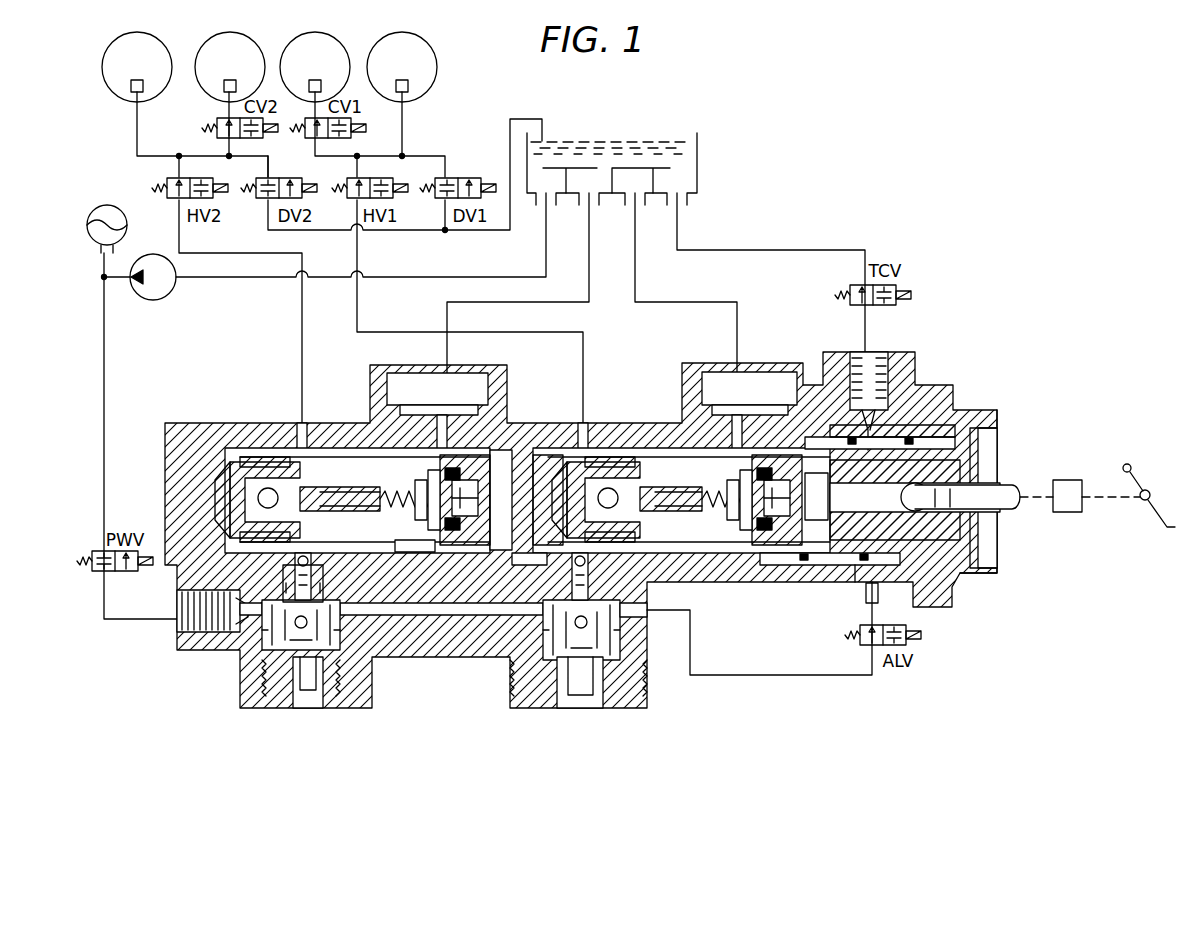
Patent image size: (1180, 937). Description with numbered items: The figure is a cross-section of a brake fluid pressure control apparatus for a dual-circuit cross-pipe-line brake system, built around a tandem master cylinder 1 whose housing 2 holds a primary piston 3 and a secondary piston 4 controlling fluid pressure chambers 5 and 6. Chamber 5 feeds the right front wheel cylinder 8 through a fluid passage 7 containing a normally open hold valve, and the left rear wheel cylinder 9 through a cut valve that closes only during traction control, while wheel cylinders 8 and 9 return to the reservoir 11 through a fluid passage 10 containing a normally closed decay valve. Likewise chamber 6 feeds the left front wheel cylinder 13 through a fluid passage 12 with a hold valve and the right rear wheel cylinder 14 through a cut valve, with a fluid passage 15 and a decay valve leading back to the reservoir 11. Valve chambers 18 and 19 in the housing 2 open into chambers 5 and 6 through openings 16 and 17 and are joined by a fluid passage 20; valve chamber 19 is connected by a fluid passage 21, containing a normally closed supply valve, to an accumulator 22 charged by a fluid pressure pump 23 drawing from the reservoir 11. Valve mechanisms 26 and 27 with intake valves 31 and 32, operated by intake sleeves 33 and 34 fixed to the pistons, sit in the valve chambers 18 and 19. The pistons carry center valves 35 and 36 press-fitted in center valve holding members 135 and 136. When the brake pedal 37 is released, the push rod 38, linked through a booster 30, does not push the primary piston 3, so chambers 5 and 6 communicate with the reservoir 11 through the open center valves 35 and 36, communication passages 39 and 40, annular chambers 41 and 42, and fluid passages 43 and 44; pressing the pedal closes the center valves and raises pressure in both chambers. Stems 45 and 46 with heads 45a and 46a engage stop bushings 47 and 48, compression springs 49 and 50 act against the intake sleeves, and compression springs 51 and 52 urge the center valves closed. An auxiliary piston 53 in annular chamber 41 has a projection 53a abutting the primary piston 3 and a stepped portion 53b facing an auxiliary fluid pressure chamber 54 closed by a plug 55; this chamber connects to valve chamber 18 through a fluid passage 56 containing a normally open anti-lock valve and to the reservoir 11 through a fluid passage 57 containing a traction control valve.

The master cylinder 1 is at (985, 580).
The master cylinder housing 2 is at (915, 352).
The primary piston 3 is at (820, 540).
The secondary piston 4 is at (500, 520).
The fluid pressure chamber 5 is at (680, 489).
The fluid pressure chamber 6 is at (348, 489).
The fluid passage 7 is at (357, 266).
The wheel cylinder 8 is at (408, 86).
The wheel cylinder 9 is at (321, 86).
The fluid passage 10 is at (427, 156).
The reservoir 11 is at (697, 170).
The fluid passage 12 is at (180, 236).
The wheel cylinder 13 is at (126, 92).
The wheel cylinder 14 is at (220, 87).
The fluid passage 15 is at (272, 162).
The opening 16 is at (530, 553).
The opening 17 is at (296, 565).
The valve chamber 18 is at (656, 584).
The valve chamber 19 is at (240, 598).
The fluid passage 20 is at (430, 657).
The fluid passage 21 is at (128, 640).
The accumulator 22 is at (100, 205).
The fluid pressure pump 23 is at (170, 296).
The valve mechanism 26 is at (590, 580).
The valve mechanism 27 is at (325, 580).
The booster 30 is at (1068, 480).
The intake valve 31 is at (620, 622).
The intake valve 32 is at (340, 632).
The intake sleeve 33 is at (630, 448).
The intake sleeve 34 is at (330, 448).
The center valve 35 is at (770, 545).
The center valve 36 is at (455, 530).
The brake pedal 37 is at (1170, 540).
The push rod 38 is at (1018, 488).
The communication passage 39 is at (820, 478).
The communication passage 40 is at (478, 475).
The annular chamber 41 is at (782, 448).
The annular chamber 42 is at (470, 452).
The fluid passage 43 is at (737, 318).
The fluid passage 44 is at (447, 318).
The stem 45 is at (660, 505).
The head 45a is at (615, 475).
The stem 46 is at (330, 505).
The head 46a is at (285, 460).
The stop bushing 47 is at (560, 455).
The stop bushing 48 is at (222, 470).
The compression spring 49 is at (722, 545).
The compression spring 50 is at (400, 553).
The compression spring 51 is at (745, 530).
The compression spring 52 is at (432, 530).
The auxiliary piston 53 is at (975, 430).
The projection 53a is at (775, 565).
The stepped portion 53b is at (855, 582).
The auxiliary fluid pressure chamber 54 is at (886, 625).
The plug 55 is at (950, 425).
The fluid passage 56 is at (790, 675).
The fluid passage 57 is at (788, 250).
The center valve holding member 135 is at (762, 545).
The center valve holding member 136 is at (420, 520).